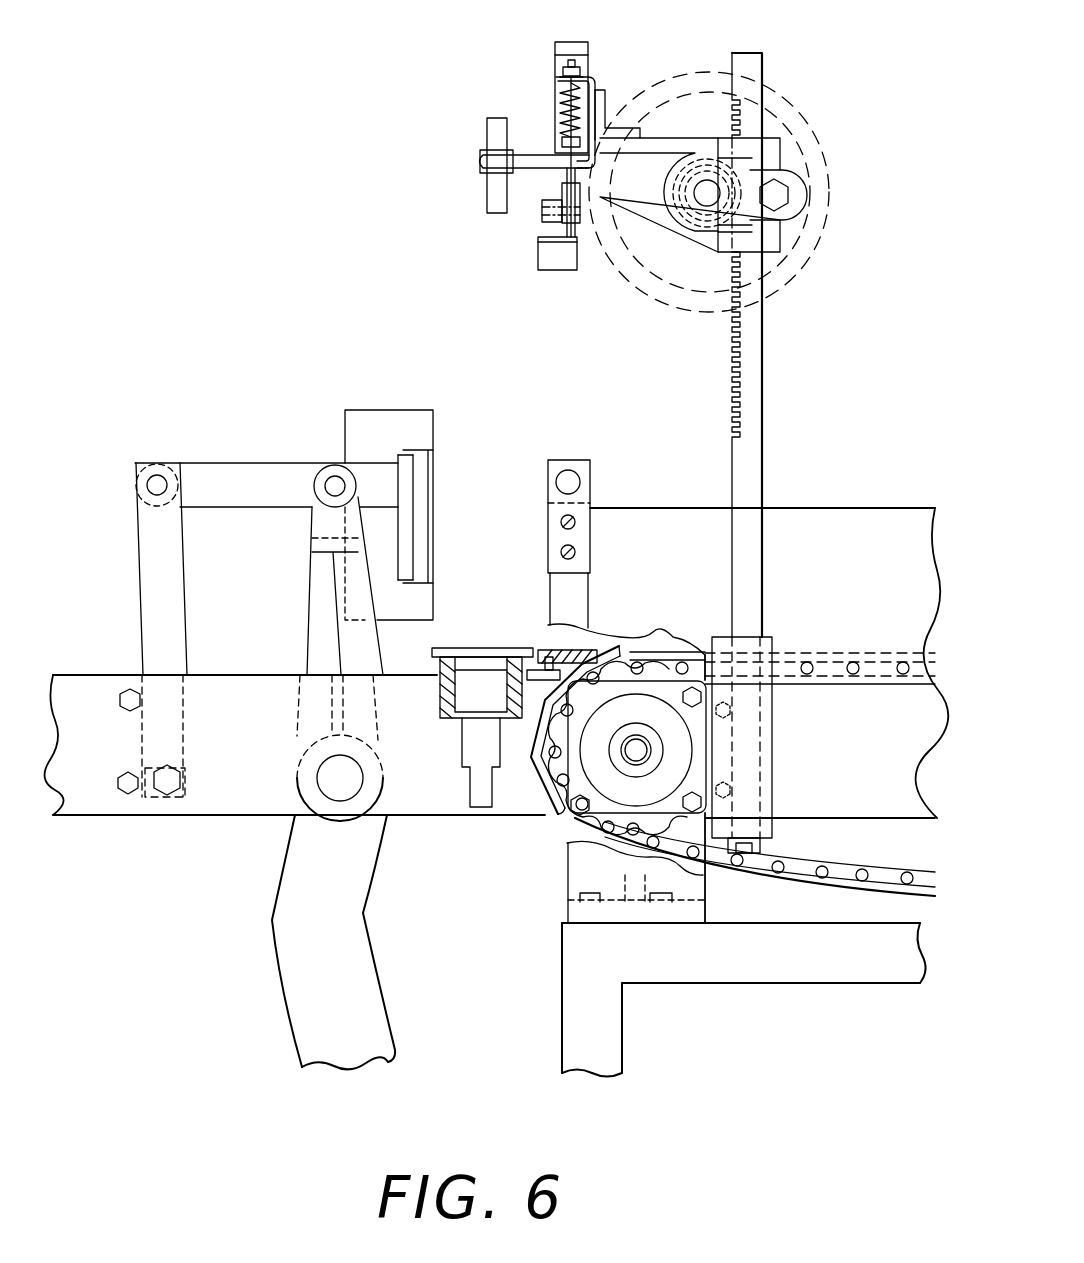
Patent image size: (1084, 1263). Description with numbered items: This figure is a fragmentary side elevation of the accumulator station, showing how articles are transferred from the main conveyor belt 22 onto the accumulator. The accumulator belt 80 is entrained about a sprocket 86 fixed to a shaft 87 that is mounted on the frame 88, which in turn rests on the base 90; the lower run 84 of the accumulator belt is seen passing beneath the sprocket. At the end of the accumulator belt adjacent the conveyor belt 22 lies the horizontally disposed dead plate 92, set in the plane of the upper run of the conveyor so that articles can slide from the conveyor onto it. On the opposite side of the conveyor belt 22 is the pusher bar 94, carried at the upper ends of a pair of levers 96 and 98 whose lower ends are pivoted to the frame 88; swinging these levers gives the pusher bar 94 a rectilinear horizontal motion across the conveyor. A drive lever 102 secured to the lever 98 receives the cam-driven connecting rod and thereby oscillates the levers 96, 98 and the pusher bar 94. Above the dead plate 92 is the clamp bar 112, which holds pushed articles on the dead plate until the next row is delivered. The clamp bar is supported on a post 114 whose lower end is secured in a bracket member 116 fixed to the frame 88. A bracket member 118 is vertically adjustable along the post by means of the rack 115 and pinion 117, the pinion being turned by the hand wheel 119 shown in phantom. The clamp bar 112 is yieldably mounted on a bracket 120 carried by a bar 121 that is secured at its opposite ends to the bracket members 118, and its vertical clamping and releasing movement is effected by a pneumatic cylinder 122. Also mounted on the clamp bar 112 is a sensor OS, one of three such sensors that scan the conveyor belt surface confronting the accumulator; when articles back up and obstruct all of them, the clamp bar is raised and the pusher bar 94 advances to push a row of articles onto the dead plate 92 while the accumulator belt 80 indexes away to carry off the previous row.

The conveyor belt 22 is at (478, 650).
The accumulator belt 80 is at (827, 648).
The lower run 84 is at (852, 893).
The sprocket 86 is at (627, 663).
The shaft 87 is at (622, 752).
The frame 88 is at (228, 806).
The base 90 is at (562, 965).
The dead plate 92 is at (567, 653).
The pusher bar 94 is at (373, 417).
The lever 96 is at (140, 552).
The lever 98 is at (312, 585).
The drive lever 102 is at (282, 945).
The clamp bar 112 is at (538, 258).
The post 114 is at (743, 345).
The rack 115 is at (732, 350).
The bracket member 116 is at (765, 742).
The pinion 117 is at (687, 207).
The bracket member 118 is at (686, 193).
The hand wheel 119 is at (800, 113).
The bracket 120 is at (594, 78).
The bar 121 is at (606, 95).
The pneumatic cylinder 122 is at (553, 42).
The sensor OS is at (487, 130).